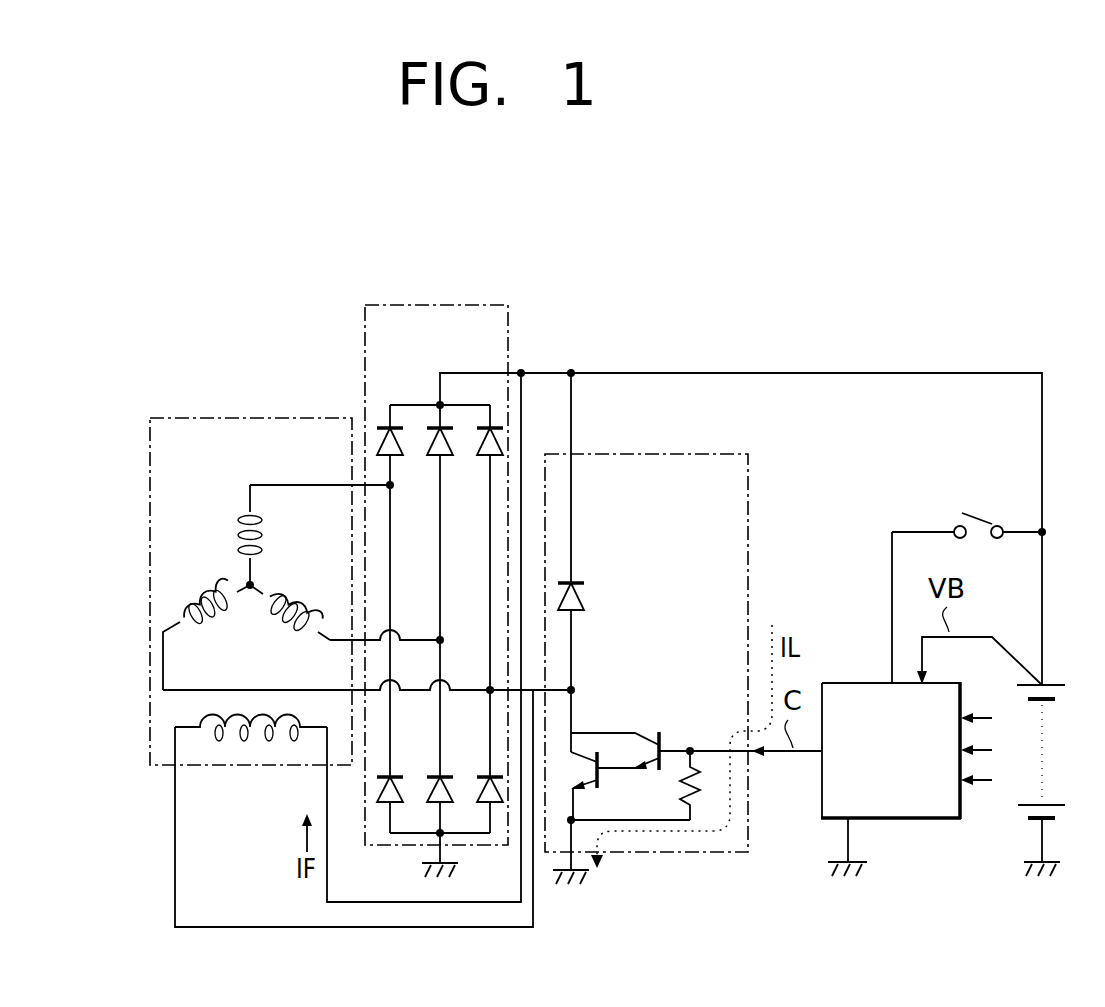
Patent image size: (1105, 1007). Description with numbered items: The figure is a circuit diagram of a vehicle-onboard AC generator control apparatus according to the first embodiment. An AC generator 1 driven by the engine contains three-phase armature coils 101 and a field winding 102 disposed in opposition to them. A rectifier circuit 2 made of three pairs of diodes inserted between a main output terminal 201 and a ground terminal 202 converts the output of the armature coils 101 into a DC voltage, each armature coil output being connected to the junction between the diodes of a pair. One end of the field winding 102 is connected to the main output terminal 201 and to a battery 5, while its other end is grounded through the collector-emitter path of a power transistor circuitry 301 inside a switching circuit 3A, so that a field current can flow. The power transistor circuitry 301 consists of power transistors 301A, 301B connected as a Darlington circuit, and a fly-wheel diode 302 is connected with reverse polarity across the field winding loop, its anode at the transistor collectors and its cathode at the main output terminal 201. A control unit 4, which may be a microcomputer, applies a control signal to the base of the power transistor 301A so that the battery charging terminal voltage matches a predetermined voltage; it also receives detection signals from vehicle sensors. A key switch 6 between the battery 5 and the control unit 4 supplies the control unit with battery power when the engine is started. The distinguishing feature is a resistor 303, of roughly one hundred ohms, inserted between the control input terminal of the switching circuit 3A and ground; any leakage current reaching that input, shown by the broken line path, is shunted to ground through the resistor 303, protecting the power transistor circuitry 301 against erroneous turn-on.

The AC generator 1 is at (221, 417).
The three-phase armature coils 101 is at (232, 552).
The field winding 102 is at (250, 740).
The rectifier circuit 2 is at (442, 300).
The main output terminal 201 is at (427, 389).
The ground terminal 202 is at (448, 838).
The switching circuit 3A is at (672, 452).
The power transistor circuitry 301 is at (672, 810).
The power transistor 301A is at (663, 741).
The power transistor 301B is at (603, 777).
The fly-wheel diode 302 is at (586, 604).
The resistor 303 is at (698, 797).
The control unit 4 is at (857, 682).
The battery 5 is at (1003, 688).
The key switch 6 is at (982, 516).